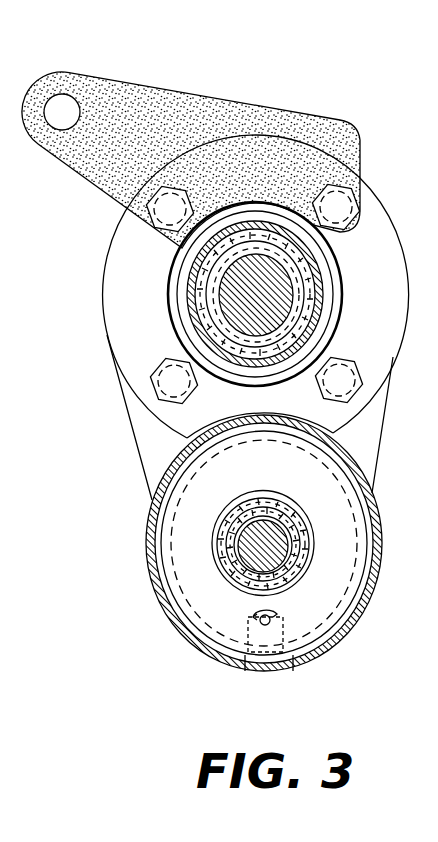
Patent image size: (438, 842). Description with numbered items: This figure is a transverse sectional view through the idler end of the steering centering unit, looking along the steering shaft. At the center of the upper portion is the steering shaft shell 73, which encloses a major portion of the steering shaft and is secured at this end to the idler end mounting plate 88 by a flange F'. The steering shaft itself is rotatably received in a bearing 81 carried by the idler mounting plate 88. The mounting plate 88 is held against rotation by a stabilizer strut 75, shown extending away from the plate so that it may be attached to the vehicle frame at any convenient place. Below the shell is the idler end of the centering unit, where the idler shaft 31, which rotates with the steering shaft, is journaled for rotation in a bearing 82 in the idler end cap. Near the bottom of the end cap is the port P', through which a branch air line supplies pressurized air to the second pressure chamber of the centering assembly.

The stabilizer strut 75 is at (137, 84).
The steering shaft shell 73 is at (188, 290).
The bearing 81 is at (187, 328).
The flange F' is at (240, 286).
The idler end mounting plate 88 is at (152, 440).
The idler shaft 31 is at (280, 520).
The bearing 82 is at (217, 560).
The port P' is at (293, 664).